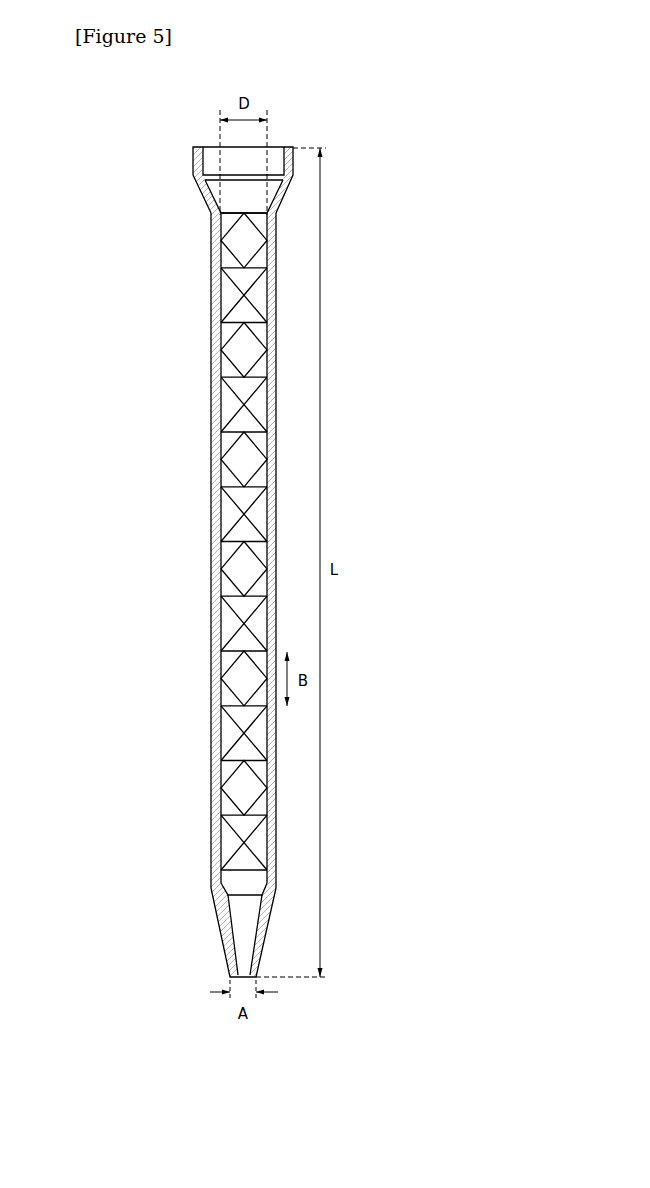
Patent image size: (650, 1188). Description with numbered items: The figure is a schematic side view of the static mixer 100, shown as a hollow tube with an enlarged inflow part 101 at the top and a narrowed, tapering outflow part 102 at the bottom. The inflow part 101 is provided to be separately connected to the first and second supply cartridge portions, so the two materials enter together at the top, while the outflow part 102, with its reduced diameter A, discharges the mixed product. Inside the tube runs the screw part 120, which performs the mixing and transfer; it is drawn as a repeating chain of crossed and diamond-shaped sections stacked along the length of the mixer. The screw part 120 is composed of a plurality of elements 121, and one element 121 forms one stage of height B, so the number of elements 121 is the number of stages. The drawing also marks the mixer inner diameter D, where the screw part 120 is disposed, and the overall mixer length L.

The static mixer 100 is at (238, 564).
The inflow part 101 is at (190, 186).
The outflow part 102 is at (228, 979).
The screw part 120 is at (277, 541).
The element 121 is at (209, 652).